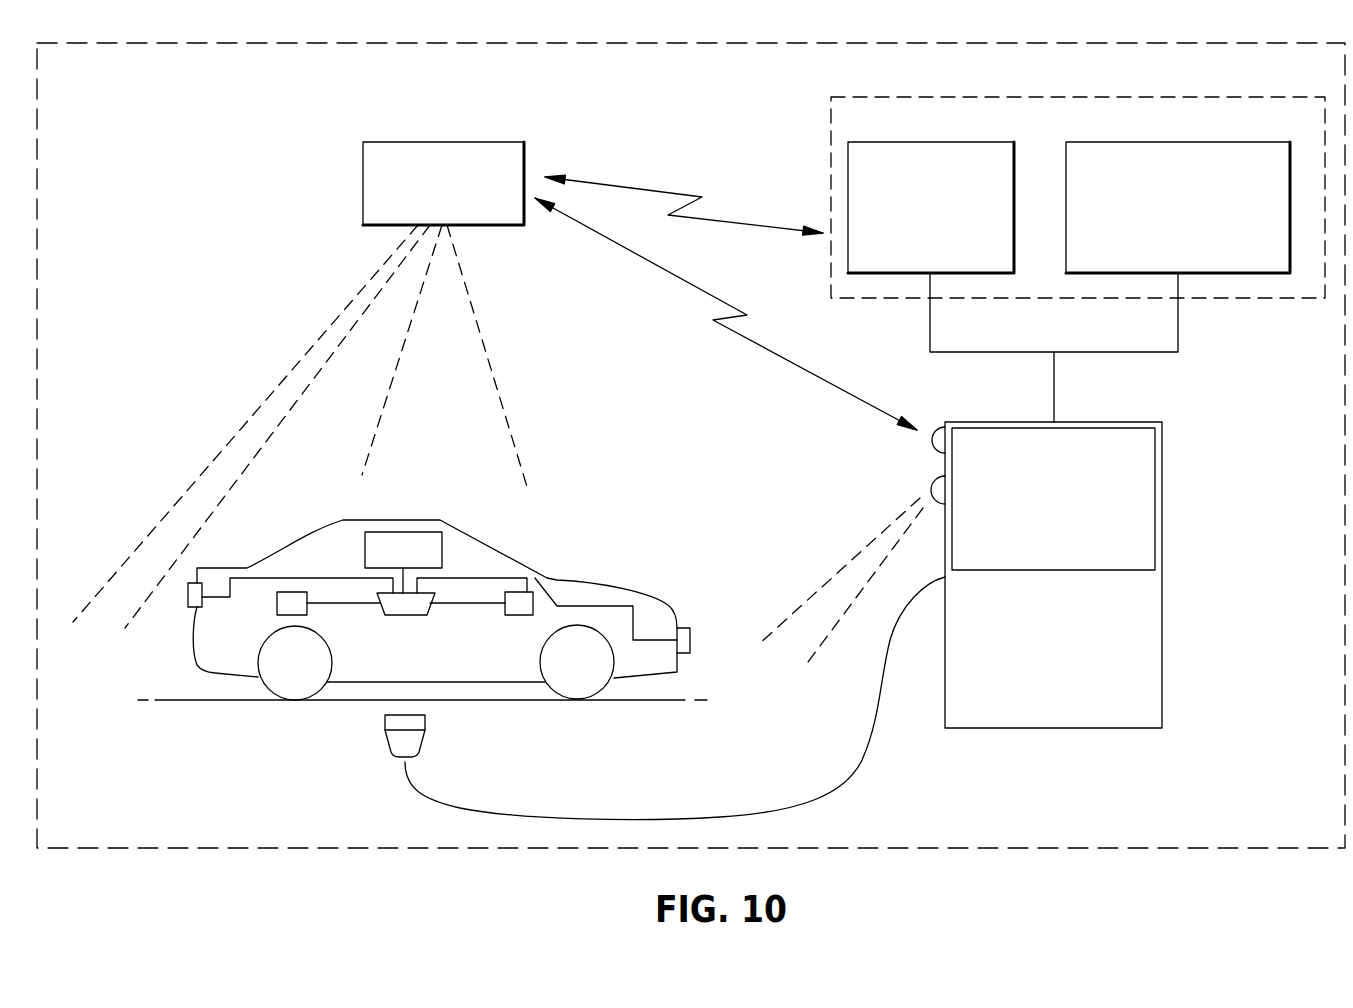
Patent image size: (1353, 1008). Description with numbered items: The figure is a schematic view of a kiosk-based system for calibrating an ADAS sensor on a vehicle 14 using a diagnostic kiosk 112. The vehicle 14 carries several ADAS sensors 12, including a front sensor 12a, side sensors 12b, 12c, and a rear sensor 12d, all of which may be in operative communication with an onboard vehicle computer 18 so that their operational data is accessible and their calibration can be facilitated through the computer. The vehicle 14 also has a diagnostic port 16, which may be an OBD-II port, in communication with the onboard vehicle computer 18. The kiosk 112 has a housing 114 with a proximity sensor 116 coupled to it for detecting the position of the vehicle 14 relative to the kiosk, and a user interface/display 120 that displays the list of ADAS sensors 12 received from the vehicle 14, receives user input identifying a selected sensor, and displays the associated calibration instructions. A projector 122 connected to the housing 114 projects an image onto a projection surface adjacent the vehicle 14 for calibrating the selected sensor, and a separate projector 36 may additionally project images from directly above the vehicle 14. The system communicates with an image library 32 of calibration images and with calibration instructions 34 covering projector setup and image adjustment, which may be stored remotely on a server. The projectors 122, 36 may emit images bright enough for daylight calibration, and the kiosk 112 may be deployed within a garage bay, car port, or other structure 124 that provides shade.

The structure 124 is at (682, 43).
The separate projector 36 is at (440, 142).
The image library 32 is at (935, 142).
The calibration instructions 34 is at (1210, 142).
The vehicle 14 is at (455, 518).
The onboard vehicle computer 18 is at (403, 532).
The diagnostic port 16 is at (392, 612).
The ADAS sensors 12 is at (428, 594).
The front sensor 12a is at (690, 641).
The side sensor 12b is at (525, 592).
The side sensor 12c is at (293, 592).
The rear sensor 12d is at (188, 605).
The kiosk 112 is at (826, 621).
The housing 114 is at (1162, 505).
The user interface/display 120 is at (1036, 510).
The proximity sensor 116 is at (932, 442).
The projector 122 is at (928, 482).